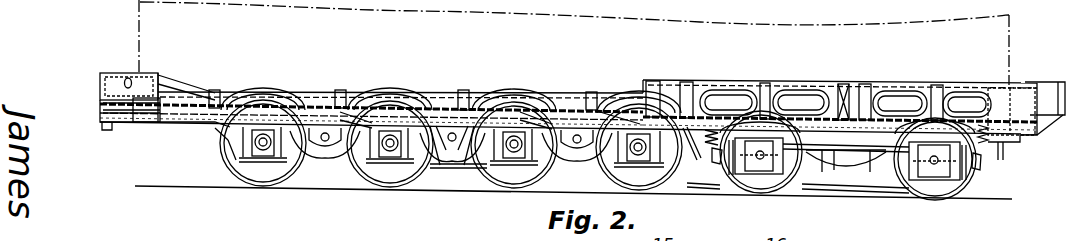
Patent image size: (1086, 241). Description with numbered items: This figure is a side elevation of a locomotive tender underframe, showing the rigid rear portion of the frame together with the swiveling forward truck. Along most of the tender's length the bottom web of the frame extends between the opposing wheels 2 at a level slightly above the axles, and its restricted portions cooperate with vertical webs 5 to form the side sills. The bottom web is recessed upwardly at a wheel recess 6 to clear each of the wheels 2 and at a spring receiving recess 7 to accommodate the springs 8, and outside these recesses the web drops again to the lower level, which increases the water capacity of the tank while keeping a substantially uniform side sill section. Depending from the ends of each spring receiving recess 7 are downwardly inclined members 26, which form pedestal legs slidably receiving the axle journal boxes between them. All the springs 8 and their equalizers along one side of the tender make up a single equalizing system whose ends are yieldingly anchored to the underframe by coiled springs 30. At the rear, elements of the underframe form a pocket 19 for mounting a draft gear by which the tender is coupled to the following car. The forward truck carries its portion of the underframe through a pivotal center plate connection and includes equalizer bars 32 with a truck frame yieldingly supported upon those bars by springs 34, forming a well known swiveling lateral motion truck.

The wheels 2 is at (350, 176).
The vertical webs 5 is at (452, 111).
The wheel recess 6 is at (523, 110).
The spring receiving recess 7 is at (355, 110).
The springs 8 is at (621, 110).
The pocket 19 is at (112, 108).
The downwardly inclined members 26 is at (562, 158).
The coiled springs 30 is at (221, 133).
The equalizer bars 32 is at (859, 168).
The springs 34 is at (836, 164).